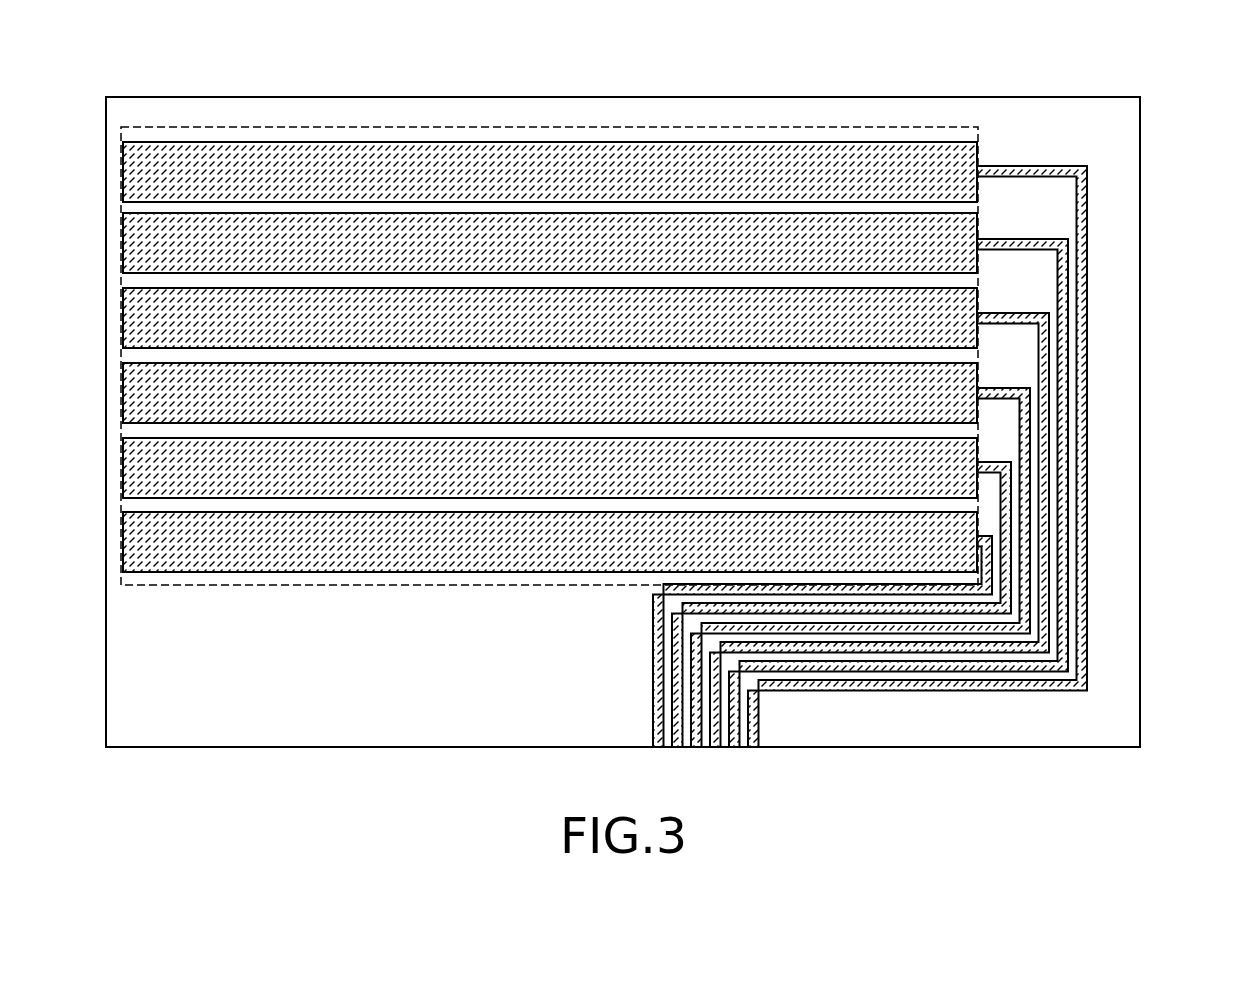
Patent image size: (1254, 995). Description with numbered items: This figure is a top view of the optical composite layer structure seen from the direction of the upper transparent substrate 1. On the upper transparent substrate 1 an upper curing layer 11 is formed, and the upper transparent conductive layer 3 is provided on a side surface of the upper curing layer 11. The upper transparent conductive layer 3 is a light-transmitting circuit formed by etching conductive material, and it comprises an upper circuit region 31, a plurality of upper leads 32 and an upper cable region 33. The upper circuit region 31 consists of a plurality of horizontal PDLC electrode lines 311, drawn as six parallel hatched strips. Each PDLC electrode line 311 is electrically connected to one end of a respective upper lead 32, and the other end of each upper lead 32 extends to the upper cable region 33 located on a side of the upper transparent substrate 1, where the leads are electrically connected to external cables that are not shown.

The upper transparent substrate 1 is at (1087, 97).
The upper curing layer 11 is at (1123, 133).
The upper transparent conductive layer 3 is at (695, 110).
The upper circuit region 31 is at (855, 126).
The PDLC electrode lines 311 is at (482, 165).
The upper leads 32 is at (1100, 212).
The upper cable region 33 is at (640, 694).